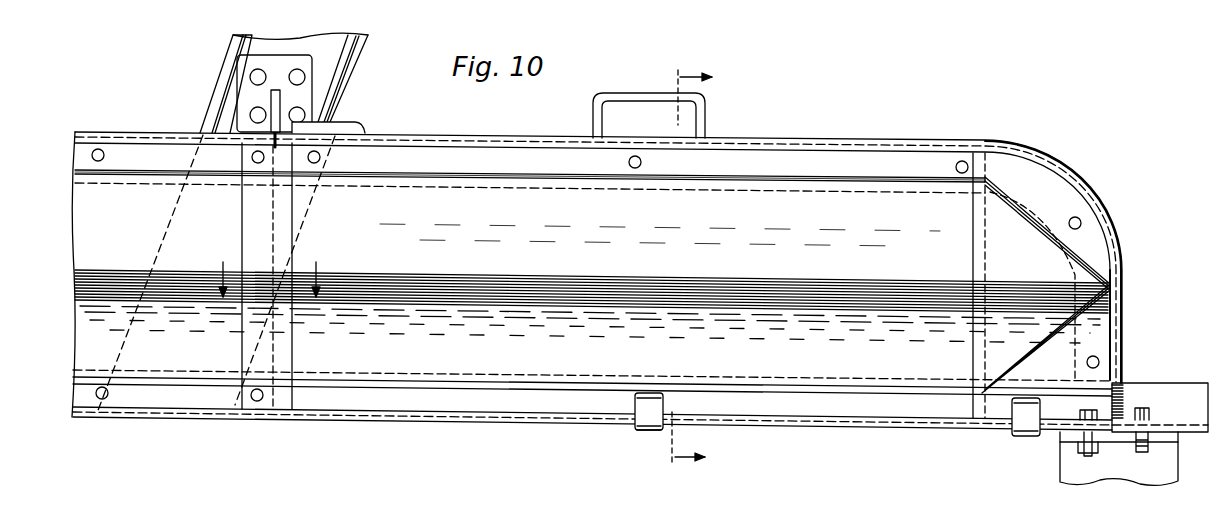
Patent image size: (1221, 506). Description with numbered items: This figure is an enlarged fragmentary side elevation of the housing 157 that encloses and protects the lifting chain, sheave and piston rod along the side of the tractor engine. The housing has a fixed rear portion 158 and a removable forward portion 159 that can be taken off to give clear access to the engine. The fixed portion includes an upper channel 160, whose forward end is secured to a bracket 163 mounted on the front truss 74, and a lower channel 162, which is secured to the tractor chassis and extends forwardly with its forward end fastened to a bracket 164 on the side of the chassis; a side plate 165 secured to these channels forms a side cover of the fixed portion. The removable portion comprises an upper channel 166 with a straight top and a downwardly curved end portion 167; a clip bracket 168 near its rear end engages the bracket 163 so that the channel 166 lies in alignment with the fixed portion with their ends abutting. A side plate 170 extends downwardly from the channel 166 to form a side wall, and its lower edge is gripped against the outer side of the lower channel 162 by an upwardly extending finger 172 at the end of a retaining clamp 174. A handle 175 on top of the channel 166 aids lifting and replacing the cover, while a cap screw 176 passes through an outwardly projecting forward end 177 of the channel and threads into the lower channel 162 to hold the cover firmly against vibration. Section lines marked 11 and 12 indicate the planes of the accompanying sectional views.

The housing 157 is at (413, 133).
The rear portion of housing 158 is at (118, 118).
The upper channel 160 is at (140, 140).
The bracket 163 is at (245, 83).
The front truss 74 is at (227, 94).
The clip bracket 168 is at (347, 123).
The handle 175 is at (700, 100).
The upper channel 166 is at (777, 148).
The forward portion of housing 159 is at (1042, 157).
The downwardly curved end portion 167 is at (1100, 218).
The side plate 165 is at (147, 395).
The side plate 170 is at (885, 406).
The lower channel 162 is at (798, 423).
The finger 172 is at (647, 412).
The retaining clamp 174 is at (650, 430).
The cap screw 176 is at (1148, 412).
The outwardly projecting forward end 177 is at (1160, 424).
The bracket 164 is at (1128, 477).
The section line 11- 11 is at (272, 276).
The section line 12- 12 is at (680, 268).